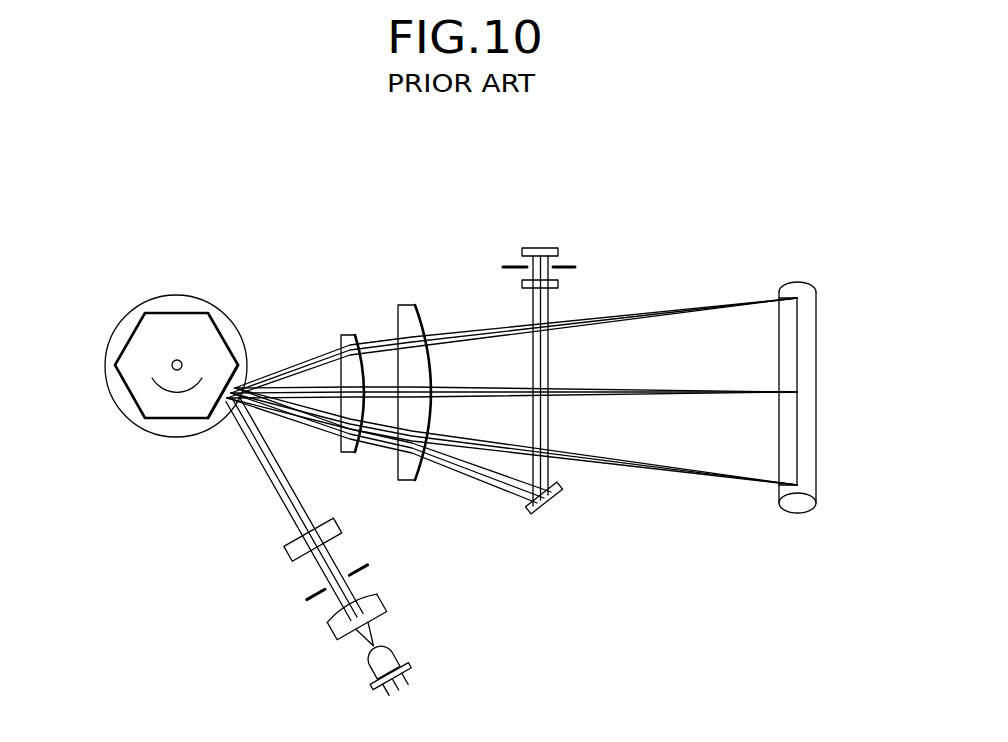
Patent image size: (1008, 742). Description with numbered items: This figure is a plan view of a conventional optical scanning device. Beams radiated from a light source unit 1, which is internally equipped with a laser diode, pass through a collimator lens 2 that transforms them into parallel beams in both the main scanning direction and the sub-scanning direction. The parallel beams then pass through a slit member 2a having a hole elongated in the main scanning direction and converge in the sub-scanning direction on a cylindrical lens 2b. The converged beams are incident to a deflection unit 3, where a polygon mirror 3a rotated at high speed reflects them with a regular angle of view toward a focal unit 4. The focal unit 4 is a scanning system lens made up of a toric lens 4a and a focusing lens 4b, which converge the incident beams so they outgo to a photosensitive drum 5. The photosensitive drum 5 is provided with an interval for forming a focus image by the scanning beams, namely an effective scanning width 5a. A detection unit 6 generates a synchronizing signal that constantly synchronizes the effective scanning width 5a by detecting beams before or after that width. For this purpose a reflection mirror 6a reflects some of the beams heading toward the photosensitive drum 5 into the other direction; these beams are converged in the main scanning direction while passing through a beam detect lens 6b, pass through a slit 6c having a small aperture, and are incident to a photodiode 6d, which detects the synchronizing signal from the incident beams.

The light source unit 1 is at (380, 664).
The collimator lens 2 is at (333, 627).
The slit member 2a is at (307, 597).
The cylindrical lens 2b is at (290, 548).
The deflection unit 3 is at (125, 295).
The polygon mirror 3a is at (138, 385).
The focal unit 4 is at (381, 346).
The toric lens 4a is at (347, 333).
The focusing lens 4b is at (428, 318).
The photosensitive drum 5 is at (808, 452).
The effective scanning width 5a is at (798, 354).
The detection unit 6 is at (587, 381).
The reflection mirror 6a is at (549, 506).
The beam detect lens 6b is at (558, 286).
The slit 6c is at (575, 268).
The photodiode 6d is at (545, 248).